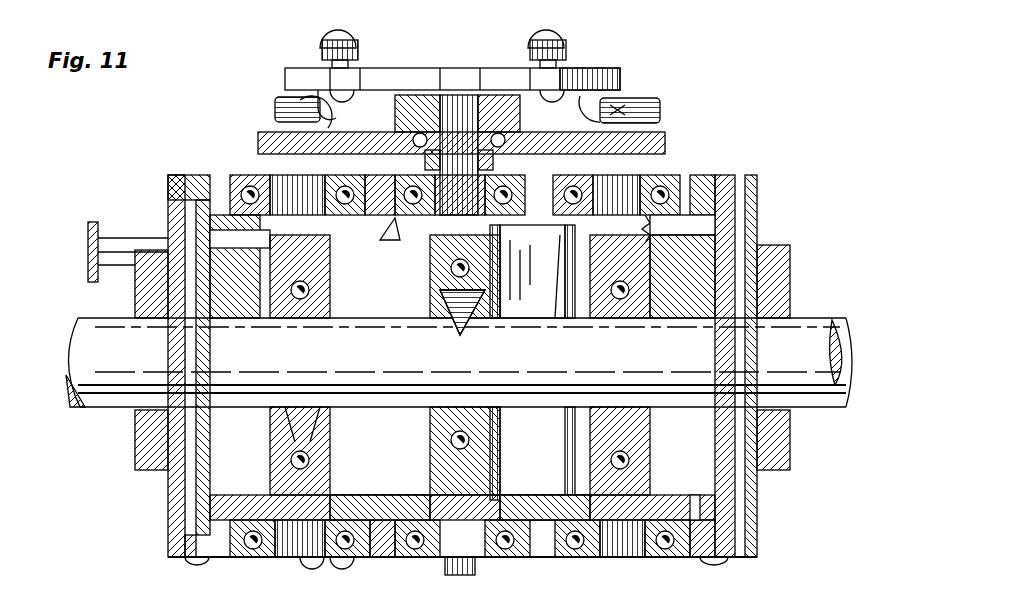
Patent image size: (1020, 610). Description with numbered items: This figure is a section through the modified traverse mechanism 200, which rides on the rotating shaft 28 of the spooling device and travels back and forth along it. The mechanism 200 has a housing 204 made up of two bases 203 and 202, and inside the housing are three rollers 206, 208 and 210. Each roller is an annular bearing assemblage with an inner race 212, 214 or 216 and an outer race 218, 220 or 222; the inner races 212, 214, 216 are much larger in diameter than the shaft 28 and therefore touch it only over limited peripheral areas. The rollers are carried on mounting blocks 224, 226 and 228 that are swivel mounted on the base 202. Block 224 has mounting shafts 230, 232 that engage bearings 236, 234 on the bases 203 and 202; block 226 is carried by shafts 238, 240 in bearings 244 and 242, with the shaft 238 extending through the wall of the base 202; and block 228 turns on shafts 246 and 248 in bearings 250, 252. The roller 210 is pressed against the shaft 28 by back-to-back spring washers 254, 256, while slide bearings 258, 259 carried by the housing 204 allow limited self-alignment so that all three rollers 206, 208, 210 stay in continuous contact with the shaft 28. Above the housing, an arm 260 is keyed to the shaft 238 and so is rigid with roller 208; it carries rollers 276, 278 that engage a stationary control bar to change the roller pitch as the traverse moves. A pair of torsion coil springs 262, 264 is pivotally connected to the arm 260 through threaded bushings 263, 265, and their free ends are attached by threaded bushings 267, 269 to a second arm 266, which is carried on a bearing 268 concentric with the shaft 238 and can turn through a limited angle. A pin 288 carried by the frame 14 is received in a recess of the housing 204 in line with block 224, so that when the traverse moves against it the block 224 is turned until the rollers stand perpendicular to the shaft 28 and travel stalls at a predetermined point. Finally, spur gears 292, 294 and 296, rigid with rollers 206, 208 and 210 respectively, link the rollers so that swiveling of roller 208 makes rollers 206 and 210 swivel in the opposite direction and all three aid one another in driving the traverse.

The frame 14 is at (88, 236).
The shaft 28 is at (115, 390).
The traverse mechanism 200 is at (775, 548).
The base 202 is at (728, 185).
The base 203 is at (700, 548).
The housing 204 is at (748, 232).
The roller 206 is at (339, 307).
The roller 208 is at (430, 275).
The roller 210 is at (659, 307).
The inner race 212 is at (322, 445).
The inner race 214 is at (490, 428).
The inner race 216 is at (640, 448).
The outer race 218 is at (340, 465).
The outer race 220 is at (495, 452).
The outer race 222 is at (645, 465).
The mounting block 224 is at (145, 198).
The mounting block 226 is at (500, 240).
The mounting block 228 is at (552, 300).
The mounting shaft 230 is at (290, 210).
The mounting shaft 232 is at (305, 560).
The bearing 234 is at (250, 180).
The bearing 236 is at (255, 560).
The shaft 238 is at (400, 255).
The shaft 240 is at (445, 558).
The bearing 242 is at (410, 218).
The bearing 244 is at (429, 566).
The shaft 246 is at (650, 178).
The shaft 248 is at (615, 555).
The bearing 250 is at (668, 180).
The bearing 252 is at (584, 566).
The spring washer 254 is at (660, 228).
The spring washer 256 is at (660, 240).
The slide bearing 258 is at (140, 470).
The slide bearing 259 is at (775, 465).
The arm 260 is at (630, 75).
The torsion coil spring 262 is at (280, 97).
The threaded bushing 263 is at (380, 68).
The torsion coil spring 264 is at (660, 115).
The threaded bushing 265 is at (587, 68).
The second arm 266 is at (290, 175).
The threaded bushing 267 is at (310, 98).
The bearing 268 is at (415, 100).
The threaded bushing 269 is at (620, 108).
The roller 276 is at (568, 38).
The roller 278 is at (365, 38).
The pin 288 is at (110, 240).
The spur gear 292 is at (190, 525).
The spur gear 294 is at (390, 505).
The spur gear 296 is at (700, 505).